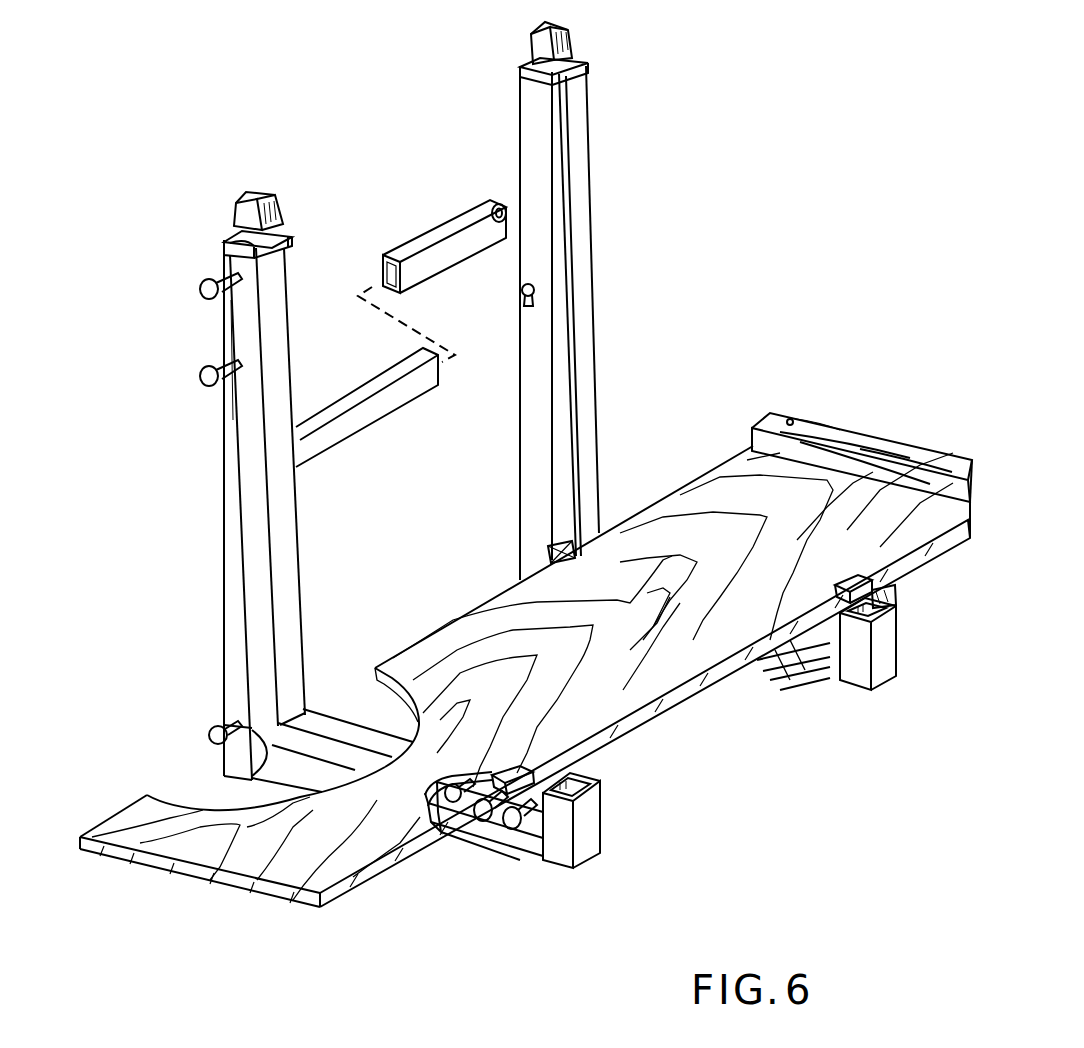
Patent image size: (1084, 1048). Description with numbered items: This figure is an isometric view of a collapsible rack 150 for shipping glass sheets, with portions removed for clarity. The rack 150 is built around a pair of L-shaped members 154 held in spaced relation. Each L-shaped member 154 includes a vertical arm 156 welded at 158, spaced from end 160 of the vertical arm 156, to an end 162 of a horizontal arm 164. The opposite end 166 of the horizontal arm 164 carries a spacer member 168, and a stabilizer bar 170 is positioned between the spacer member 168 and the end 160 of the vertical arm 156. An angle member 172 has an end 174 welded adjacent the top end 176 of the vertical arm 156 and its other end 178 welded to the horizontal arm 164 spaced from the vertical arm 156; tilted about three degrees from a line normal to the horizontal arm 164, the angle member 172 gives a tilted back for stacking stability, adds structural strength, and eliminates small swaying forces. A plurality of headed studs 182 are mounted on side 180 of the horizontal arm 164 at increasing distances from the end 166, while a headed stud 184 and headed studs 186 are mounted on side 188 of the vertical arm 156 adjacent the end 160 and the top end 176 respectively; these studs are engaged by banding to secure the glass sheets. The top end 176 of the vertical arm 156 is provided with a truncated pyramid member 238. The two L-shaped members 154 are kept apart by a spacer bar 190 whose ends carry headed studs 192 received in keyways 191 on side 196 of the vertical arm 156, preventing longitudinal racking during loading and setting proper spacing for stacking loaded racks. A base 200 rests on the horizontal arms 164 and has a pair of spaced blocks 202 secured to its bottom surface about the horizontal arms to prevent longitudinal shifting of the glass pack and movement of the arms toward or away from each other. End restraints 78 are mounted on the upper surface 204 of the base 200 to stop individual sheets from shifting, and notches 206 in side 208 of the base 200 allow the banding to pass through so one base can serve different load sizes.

The end restraints 78 is at (860, 445).
The collapsible rack 150 is at (603, 131).
The L-shaped member 154 is at (503, 76).
The vertical arm 156 is at (516, 465).
The weld 158 is at (550, 552).
The end of vertical arm 160 is at (234, 777).
The end of horizontal arm 162 is at (270, 785).
The horizontal arm 164 is at (321, 711).
The end of horizontal arm 166 is at (547, 800).
The spacer member 168 is at (600, 835).
The stabilizer bar 170 is at (518, 865).
The angle member 172 is at (586, 236).
The end of angle member 174 is at (578, 72).
The top end of vertical arm 176 is at (566, 62).
The other end of angle member 178 is at (300, 698).
The side of horizontal arm 180 is at (582, 778).
The headed studs 182 is at (508, 822).
The headed stud 184 is at (210, 728).
The headed studs 186 is at (214, 380).
The side of vertical arm 188 is at (228, 455).
The spacer bar 190 is at (392, 254).
The keyways 191 is at (521, 291).
The headed studs 192 is at (497, 204).
The side of vertical arm 196 is at (520, 380).
The base 200 is at (667, 724).
The spacer blocks 202 is at (418, 802).
The upper surface of base 204 is at (328, 880).
The notches 206 is at (488, 775).
The side of base 208 is at (335, 868).
The truncated pyramid member 238 is at (560, 33).